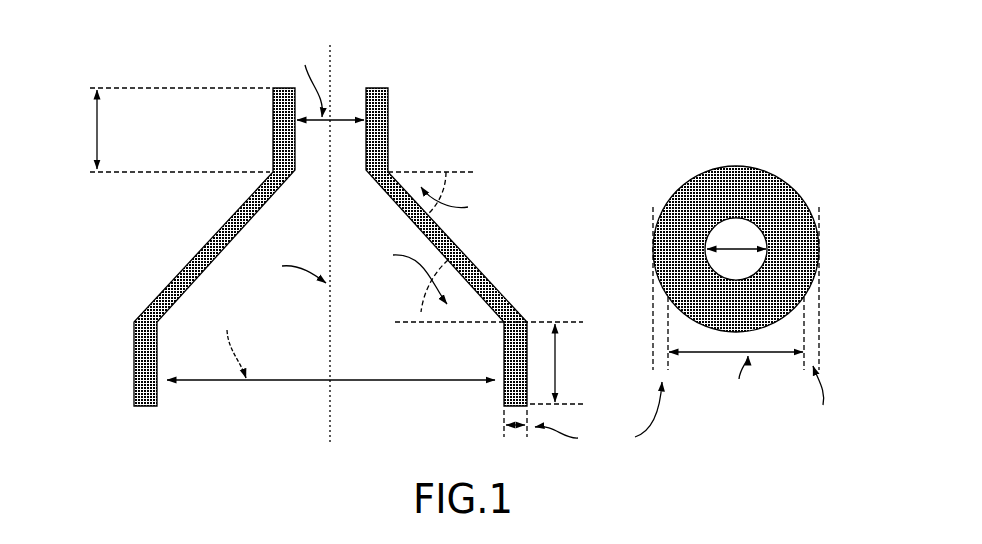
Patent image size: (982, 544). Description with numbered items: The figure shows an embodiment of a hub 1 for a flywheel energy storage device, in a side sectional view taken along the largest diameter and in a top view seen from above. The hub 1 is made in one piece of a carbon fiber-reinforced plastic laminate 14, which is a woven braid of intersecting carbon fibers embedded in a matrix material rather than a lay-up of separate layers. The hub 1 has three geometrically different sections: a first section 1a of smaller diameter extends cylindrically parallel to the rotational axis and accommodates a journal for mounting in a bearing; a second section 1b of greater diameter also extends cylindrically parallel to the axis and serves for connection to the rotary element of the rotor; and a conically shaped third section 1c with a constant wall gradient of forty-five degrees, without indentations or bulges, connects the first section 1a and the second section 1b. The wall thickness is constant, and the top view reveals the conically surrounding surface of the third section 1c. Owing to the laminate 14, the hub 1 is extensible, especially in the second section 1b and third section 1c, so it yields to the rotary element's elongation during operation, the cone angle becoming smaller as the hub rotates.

The hub 1 is at (449, 232).
The first section 1a is at (270, 128).
The second section 1b is at (132, 365).
The third section 1c is at (227, 208).
The carbon fiber-reinforced plastic laminate 14 is at (449, 247).